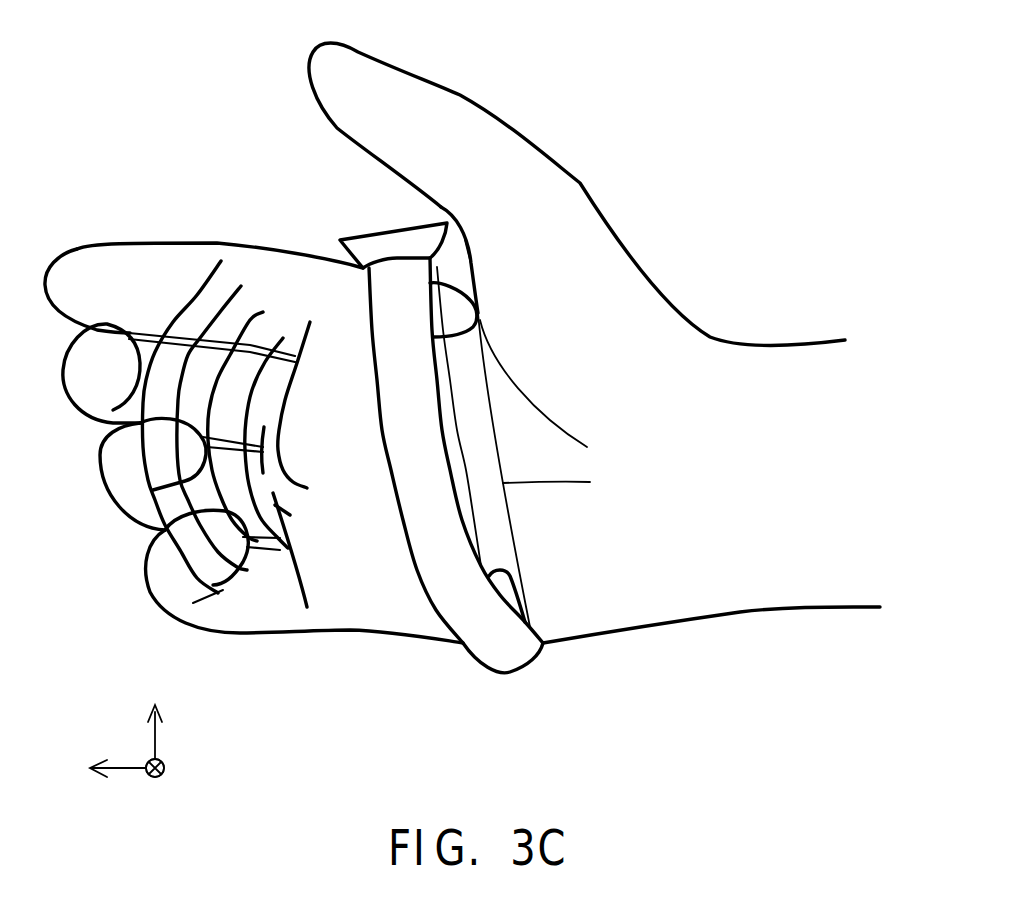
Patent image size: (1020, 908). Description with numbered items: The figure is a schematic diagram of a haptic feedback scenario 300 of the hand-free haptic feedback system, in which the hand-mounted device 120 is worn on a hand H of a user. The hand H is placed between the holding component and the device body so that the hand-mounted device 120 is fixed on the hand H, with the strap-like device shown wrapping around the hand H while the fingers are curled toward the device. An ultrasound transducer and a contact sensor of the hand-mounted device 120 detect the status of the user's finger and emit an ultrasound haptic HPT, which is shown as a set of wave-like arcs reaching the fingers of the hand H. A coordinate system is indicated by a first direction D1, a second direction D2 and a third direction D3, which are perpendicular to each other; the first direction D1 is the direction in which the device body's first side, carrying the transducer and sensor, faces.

The hand-mounted device 120 is at (383, 243).
The ultrasound haptic HPT is at (228, 219).
The hand H is at (580, 183).
The haptic feedback scenario 300 is at (877, 710).
The first direction D1 is at (103, 768).
The second direction D2 is at (173, 770).
The third direction D3 is at (153, 712).